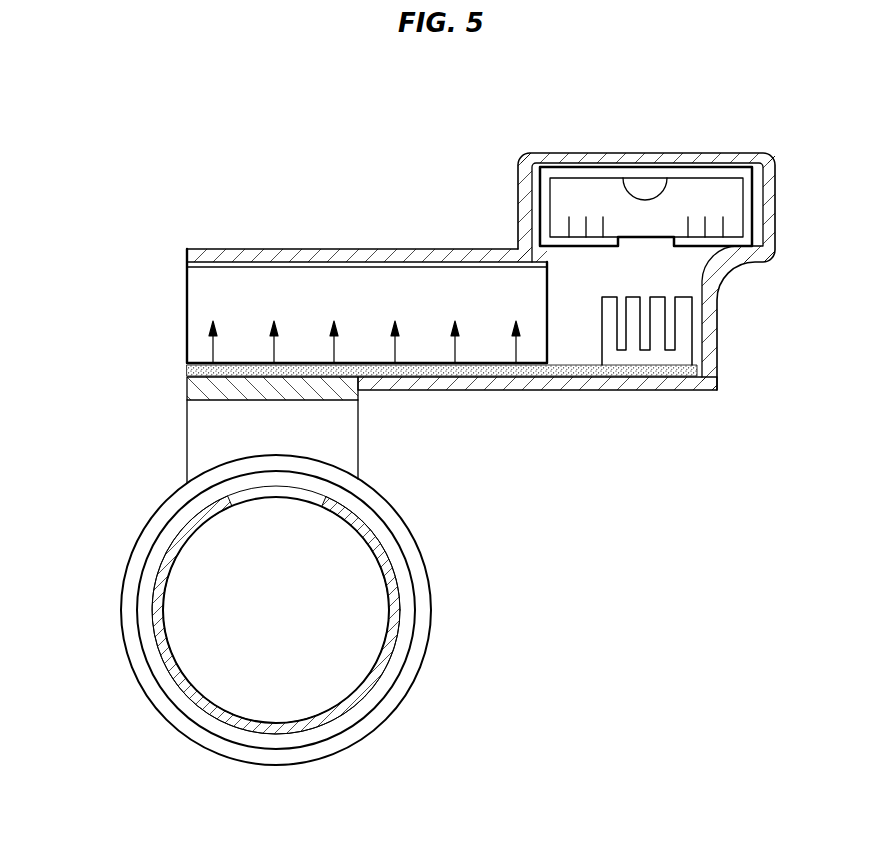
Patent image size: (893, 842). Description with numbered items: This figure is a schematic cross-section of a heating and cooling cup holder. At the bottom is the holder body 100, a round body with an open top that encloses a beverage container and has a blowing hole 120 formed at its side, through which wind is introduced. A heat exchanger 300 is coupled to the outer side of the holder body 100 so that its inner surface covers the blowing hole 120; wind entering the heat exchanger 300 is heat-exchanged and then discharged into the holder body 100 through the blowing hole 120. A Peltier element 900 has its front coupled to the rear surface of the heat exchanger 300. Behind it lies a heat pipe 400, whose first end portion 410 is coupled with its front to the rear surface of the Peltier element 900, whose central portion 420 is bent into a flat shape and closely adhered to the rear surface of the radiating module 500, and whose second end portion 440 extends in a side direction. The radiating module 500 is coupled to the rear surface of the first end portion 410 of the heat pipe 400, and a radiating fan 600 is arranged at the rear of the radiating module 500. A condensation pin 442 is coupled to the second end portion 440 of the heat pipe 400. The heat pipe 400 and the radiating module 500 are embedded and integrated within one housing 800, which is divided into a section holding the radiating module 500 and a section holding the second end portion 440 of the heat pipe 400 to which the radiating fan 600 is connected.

The holder body 100 is at (397, 603).
The blowing hole 120 is at (283, 490).
The heat exchanger 300 is at (197, 440).
The Peltier element 900 is at (193, 387).
The first end portion of the heat pipe 410 is at (247, 373).
The radiating module 500 is at (338, 260).
The heat pipe 400 is at (577, 378).
The central portion of the heat pipe 420 is at (472, 375).
The second end portion of the heat pipe 440 is at (647, 375).
The condensation pin 442 is at (683, 325).
The radiating fan 600 is at (582, 188).
The housing 800 is at (705, 158).